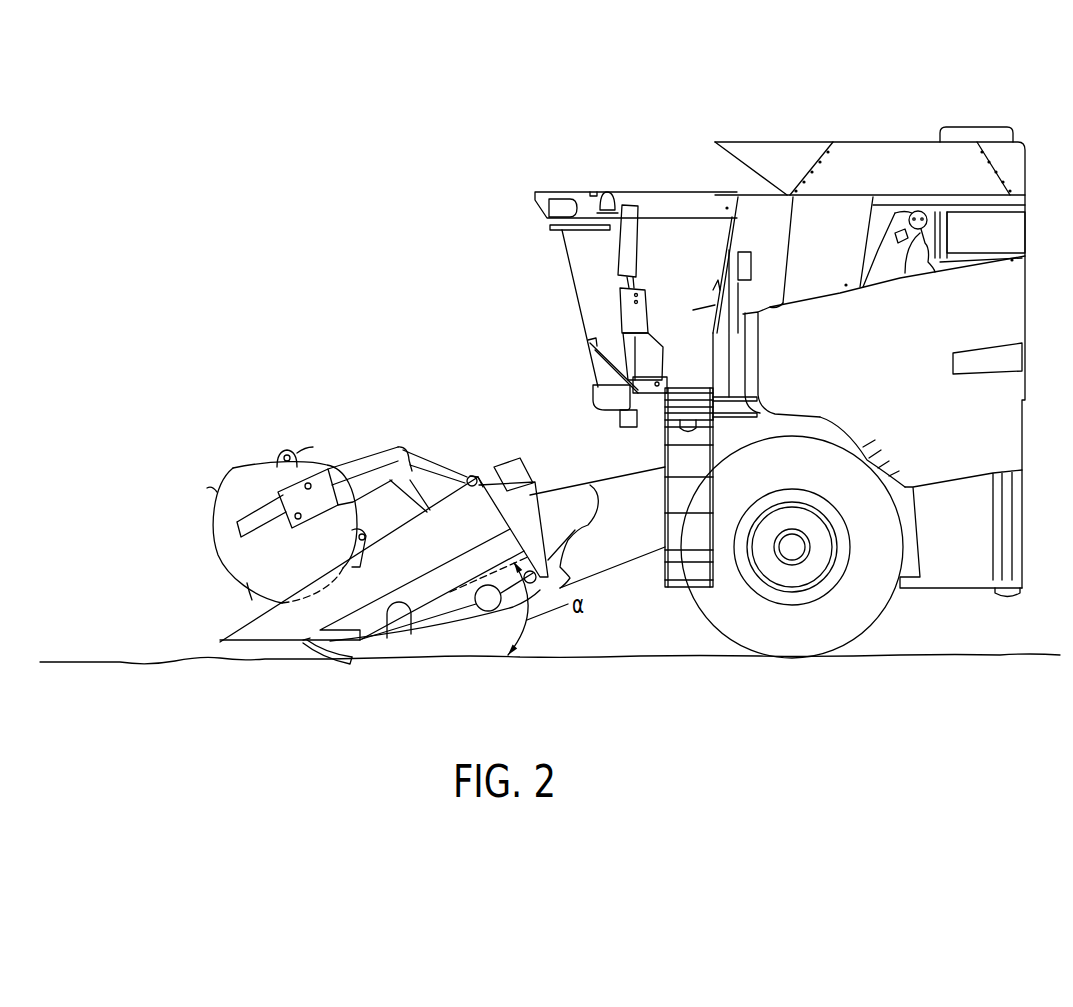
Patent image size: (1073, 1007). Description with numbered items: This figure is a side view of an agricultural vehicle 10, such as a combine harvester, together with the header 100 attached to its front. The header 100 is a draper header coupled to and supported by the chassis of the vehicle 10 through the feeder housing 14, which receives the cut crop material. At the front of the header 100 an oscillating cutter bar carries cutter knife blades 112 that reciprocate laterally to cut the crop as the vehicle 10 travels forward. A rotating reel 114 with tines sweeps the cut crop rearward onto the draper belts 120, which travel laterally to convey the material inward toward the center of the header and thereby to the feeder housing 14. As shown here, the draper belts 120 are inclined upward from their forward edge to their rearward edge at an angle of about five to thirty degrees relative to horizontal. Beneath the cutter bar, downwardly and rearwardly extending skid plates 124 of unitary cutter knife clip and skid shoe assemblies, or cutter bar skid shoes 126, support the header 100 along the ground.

The agricultural vehicle 10 is at (894, 115).
The feeder housing 14 is at (573, 485).
The header 100 is at (430, 443).
The cutter knife blades 112 is at (302, 643).
The rotating reel 114 is at (287, 450).
The draper belts 120 is at (410, 634).
The skid plate 124 is at (331, 674).
The cutter bar skid shoe 126 is at (352, 680).